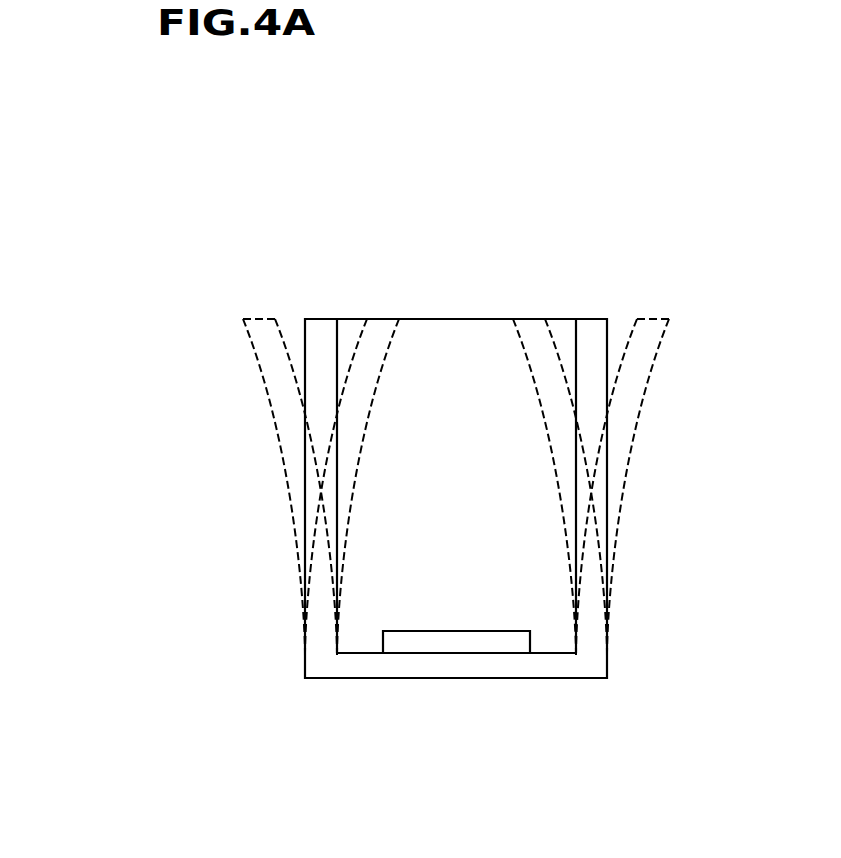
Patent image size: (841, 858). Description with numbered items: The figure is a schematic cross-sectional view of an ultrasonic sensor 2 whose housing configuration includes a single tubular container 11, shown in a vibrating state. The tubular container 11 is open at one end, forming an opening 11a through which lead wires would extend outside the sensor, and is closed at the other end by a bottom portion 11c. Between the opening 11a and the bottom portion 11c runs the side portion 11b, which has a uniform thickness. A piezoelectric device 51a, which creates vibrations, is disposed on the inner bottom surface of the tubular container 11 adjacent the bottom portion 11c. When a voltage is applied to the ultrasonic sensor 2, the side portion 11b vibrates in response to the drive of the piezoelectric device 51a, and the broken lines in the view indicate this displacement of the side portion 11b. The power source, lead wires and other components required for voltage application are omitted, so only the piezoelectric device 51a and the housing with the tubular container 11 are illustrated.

The ultrasonic sensor 2 is at (69, 150).
The tubular container 11 is at (576, 312).
The opening 11a is at (352, 320).
The side portion 11b is at (307, 492).
The bottom portion 11c is at (358, 670).
The piezoelectric device 51a is at (462, 645).